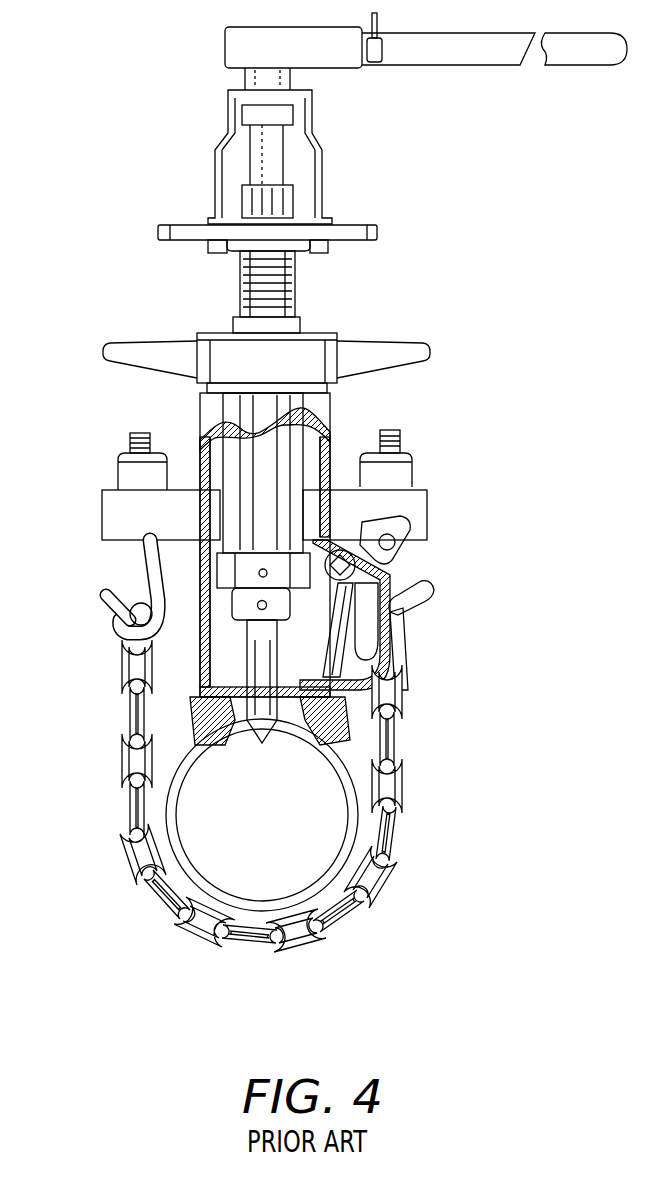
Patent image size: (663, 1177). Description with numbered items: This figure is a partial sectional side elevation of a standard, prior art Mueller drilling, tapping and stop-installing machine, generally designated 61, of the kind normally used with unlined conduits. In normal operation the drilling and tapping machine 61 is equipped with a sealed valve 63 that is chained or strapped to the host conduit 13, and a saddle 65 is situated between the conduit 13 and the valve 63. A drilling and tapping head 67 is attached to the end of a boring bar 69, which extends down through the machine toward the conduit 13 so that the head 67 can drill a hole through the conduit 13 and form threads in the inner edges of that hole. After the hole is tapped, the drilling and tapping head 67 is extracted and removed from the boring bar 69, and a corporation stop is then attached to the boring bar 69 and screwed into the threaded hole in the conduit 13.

The conduit 13 is at (353, 825).
The drilling and tapping machine 61 is at (420, 464).
The sealed valve 63 is at (197, 660).
The saddle 65 is at (317, 717).
The drilling and tapping head 67 is at (203, 685).
The boring bar 69 is at (257, 477).